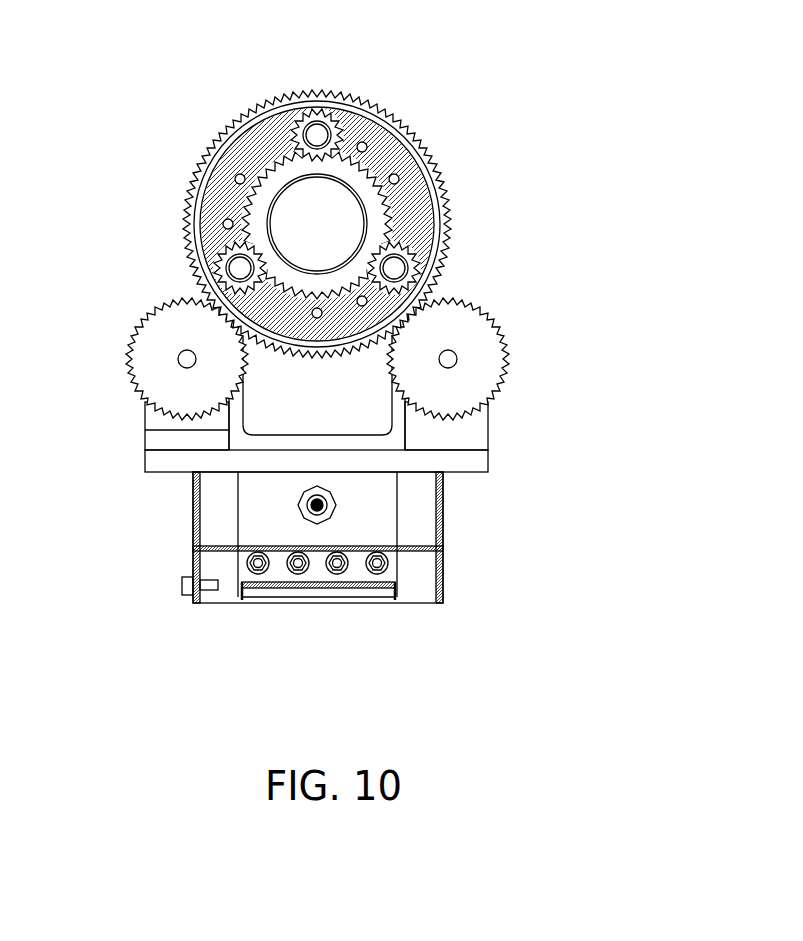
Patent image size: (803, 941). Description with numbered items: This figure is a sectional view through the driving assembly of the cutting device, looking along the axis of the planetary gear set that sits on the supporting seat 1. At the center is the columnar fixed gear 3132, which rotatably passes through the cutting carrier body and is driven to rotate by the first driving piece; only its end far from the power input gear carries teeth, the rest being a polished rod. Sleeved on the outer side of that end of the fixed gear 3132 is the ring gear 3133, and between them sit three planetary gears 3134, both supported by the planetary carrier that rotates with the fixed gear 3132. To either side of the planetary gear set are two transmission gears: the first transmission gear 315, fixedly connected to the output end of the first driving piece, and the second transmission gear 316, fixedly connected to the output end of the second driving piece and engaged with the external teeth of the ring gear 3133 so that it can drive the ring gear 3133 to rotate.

The supporting seat 1 is at (422, 500).
The first transmission gear 315 is at (147, 343).
The second transmission gear 316 is at (483, 333).
The fixed gear 3132 is at (368, 203).
The ring gear 3133 is at (408, 130).
The planetary gear 3134 is at (322, 123).